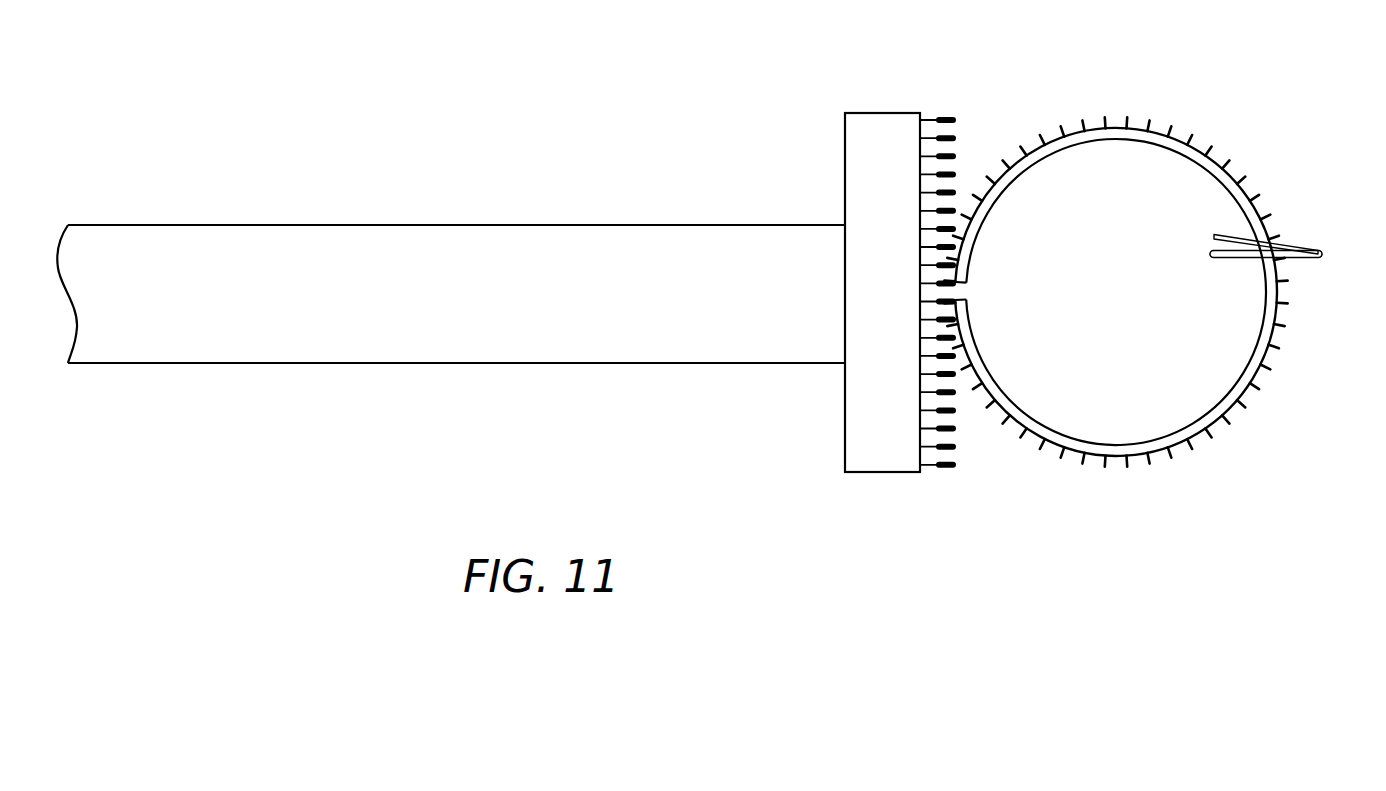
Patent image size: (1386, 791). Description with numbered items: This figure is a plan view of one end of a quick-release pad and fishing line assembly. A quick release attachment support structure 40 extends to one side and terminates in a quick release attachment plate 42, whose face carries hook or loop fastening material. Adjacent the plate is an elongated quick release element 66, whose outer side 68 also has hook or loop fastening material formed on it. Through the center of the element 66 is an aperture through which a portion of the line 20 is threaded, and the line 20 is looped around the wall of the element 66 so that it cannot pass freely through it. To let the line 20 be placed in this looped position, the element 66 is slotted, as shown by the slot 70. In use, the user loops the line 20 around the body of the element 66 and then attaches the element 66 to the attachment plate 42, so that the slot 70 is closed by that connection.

The line 20 is at (1315, 250).
The quick release attachment support structure 40 is at (443, 224).
The quick release attachment plate 42 is at (872, 113).
The quick release element 66 is at (1164, 247).
The outer side 68 is at (1232, 172).
The slot 70 is at (962, 287).